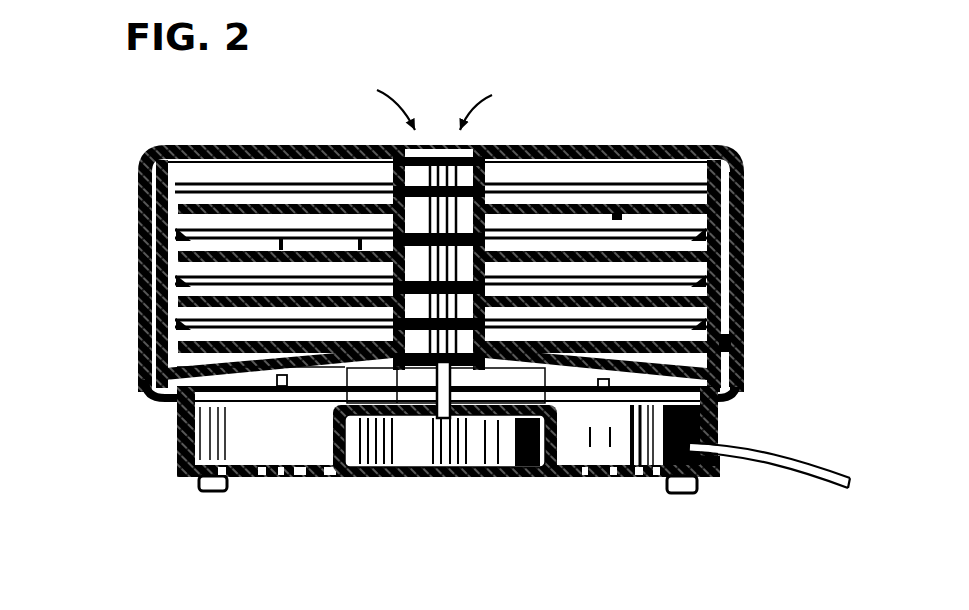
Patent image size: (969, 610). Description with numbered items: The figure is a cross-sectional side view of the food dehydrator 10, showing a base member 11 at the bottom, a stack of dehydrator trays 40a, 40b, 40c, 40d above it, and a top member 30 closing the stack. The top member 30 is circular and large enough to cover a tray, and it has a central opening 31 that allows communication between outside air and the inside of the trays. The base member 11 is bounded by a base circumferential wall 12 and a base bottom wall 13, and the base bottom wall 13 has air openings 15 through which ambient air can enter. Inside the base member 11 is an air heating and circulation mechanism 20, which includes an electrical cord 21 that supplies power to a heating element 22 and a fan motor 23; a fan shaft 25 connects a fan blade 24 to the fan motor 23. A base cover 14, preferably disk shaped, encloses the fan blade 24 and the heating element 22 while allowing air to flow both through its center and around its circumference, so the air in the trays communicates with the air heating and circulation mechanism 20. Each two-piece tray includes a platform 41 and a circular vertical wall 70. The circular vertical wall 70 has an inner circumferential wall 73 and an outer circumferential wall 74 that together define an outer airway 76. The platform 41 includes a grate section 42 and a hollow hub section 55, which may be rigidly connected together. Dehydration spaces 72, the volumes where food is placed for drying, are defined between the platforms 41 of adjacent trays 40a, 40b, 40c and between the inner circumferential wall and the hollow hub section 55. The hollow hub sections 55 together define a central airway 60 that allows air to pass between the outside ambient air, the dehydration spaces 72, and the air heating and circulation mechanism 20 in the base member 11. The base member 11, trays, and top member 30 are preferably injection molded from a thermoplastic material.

The food dehydrator 10 is at (726, 144).
The base member 11 is at (730, 465).
The base circumferential wall 12 is at (177, 437).
The base bottom wall 13 is at (238, 478).
The base cover 14 is at (177, 412).
The air openings 15 is at (303, 478).
The air heating and circulation mechanism 20 is at (409, 490).
The electrical cord 21 is at (790, 455).
The heating element 22 is at (282, 387).
The fan motor 23 is at (493, 433).
The fan blade 24 is at (397, 470).
The fan shaft 25 is at (466, 432).
The top member 30 is at (223, 134).
The central opening 31 is at (475, 148).
The dehydrator tray 40a is at (128, 201).
The dehydrator tray 40b is at (128, 250).
The dehydrator tray 40c is at (128, 291).
The dehydrator tray 40d is at (128, 324).
The platform 41 is at (281, 248).
The grate section 42 is at (360, 248).
The hollow hub section 55 is at (575, 203).
The central airway 60 is at (439, 264).
The circular vertical wall 70 is at (140, 330).
The dehydration spaces 72 is at (616, 215).
The inner circumferential wall 73 is at (745, 268).
The outer circumferential wall 74 is at (745, 205).
The outer airway 76 is at (745, 343).